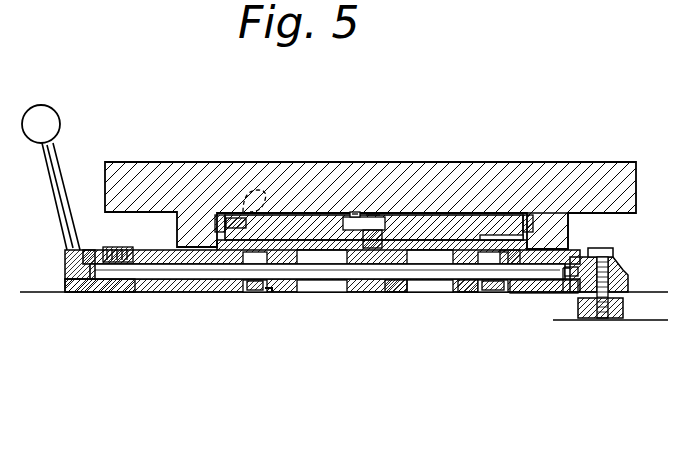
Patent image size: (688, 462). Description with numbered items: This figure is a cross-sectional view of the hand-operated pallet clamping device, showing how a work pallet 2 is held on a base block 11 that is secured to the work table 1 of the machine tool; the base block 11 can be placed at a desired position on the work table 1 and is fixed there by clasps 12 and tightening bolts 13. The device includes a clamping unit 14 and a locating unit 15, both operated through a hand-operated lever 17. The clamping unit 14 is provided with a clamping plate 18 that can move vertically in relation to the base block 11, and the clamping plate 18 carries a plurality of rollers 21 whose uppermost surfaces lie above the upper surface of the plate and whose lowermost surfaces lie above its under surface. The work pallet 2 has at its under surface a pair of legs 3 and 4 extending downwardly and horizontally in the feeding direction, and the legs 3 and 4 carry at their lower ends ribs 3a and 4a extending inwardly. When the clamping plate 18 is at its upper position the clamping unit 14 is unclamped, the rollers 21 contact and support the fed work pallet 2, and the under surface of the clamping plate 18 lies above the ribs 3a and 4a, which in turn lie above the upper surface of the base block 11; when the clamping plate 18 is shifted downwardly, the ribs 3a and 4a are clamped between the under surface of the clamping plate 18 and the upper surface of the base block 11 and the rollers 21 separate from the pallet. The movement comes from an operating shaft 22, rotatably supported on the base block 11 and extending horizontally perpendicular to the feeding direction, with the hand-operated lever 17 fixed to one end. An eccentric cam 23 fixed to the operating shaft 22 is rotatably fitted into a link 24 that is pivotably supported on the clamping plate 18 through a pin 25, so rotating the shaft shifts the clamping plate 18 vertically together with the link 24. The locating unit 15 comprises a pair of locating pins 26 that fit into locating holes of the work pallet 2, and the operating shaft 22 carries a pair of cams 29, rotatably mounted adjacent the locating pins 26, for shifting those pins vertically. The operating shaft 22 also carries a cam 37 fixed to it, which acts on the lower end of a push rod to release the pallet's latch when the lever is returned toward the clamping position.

The work table 1 is at (40, 292).
The work pallet 2 is at (626, 182).
The leg 3 is at (565, 230).
The rib 3a is at (517, 293).
The leg 4 is at (172, 236).
The rib 4a is at (217, 250).
The base block 11 is at (547, 290).
The clasp 12 is at (627, 282).
The tightening bolt 13 is at (605, 312).
The clamping unit 14 is at (373, 211).
The locating unit 15 is at (268, 293).
The hand-operated lever 17 is at (57, 118).
The clamping plate 18 is at (475, 232).
The roller 21 is at (220, 213).
The operating shaft 22 is at (193, 272).
The eccentric cam 23 is at (395, 293).
The link 24 is at (396, 222).
The pin 25 is at (350, 212).
The locating pin 26 is at (262, 195).
The cam 29 is at (255, 290).
The cam 37 is at (330, 293).